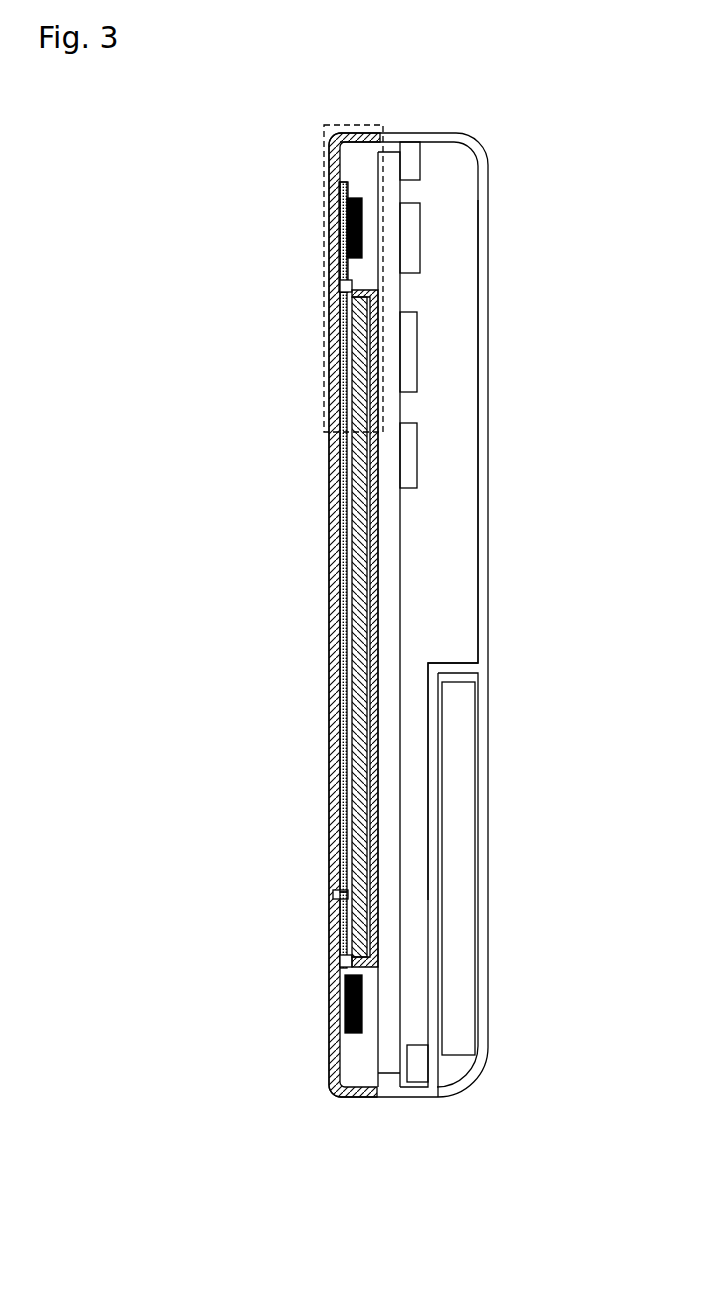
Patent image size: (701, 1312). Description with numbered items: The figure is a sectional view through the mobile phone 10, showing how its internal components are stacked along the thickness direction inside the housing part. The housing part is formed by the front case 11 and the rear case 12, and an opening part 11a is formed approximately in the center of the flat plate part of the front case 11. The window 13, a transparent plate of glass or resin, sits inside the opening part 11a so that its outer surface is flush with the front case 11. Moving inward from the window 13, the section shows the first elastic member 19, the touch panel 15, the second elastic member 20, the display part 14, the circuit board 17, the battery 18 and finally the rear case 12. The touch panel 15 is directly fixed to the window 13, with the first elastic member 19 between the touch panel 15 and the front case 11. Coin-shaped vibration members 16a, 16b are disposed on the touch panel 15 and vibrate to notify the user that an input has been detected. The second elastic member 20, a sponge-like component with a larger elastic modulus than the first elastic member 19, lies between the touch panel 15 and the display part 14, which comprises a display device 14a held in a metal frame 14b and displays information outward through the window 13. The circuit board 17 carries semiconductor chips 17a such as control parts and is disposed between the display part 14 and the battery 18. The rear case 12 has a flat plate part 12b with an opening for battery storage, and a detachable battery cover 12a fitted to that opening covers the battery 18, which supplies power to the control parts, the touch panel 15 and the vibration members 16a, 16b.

The mobile phone 10 is at (430, 1120).
The front case 11 is at (338, 146).
The opening part 11a is at (334, 891).
The rear case 12 is at (487, 604).
The battery cover 12a is at (487, 827).
The flat plate part 12b is at (490, 517).
The window 13 is at (342, 625).
The display part 14 is at (298, 628).
The display device 14a is at (357, 515).
The metal frame 14b is at (373, 543).
The touch panel 15 is at (343, 200).
The vibration member 16a is at (352, 990).
The vibration member 16b is at (355, 228).
The circuit board 17 is at (388, 1068).
The semiconductor chips 17a is at (420, 252).
The battery 18 is at (462, 718).
The first elastic member 19 is at (346, 265).
The second elastic member 20 is at (352, 290).